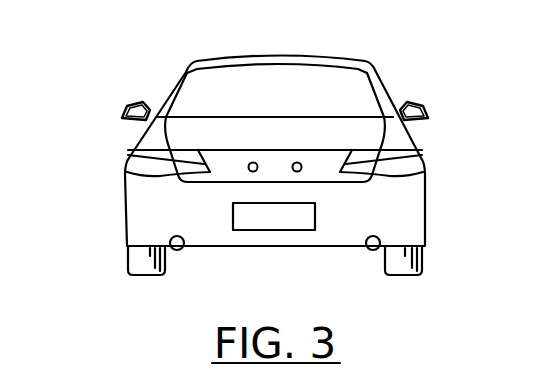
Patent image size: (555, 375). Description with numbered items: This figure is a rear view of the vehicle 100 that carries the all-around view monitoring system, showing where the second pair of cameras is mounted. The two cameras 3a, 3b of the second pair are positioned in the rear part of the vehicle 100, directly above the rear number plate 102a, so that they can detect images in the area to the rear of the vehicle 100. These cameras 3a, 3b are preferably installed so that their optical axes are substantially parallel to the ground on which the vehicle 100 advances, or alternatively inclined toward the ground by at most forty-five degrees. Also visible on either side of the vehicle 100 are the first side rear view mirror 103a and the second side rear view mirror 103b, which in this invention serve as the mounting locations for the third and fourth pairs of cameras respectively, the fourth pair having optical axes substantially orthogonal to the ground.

The vehicle 100 is at (197, 59).
The camera of the second pair 3a is at (253, 162).
The camera of the second pair 3b is at (297, 162).
The first side rear view mirror 103a is at (122, 117).
The second side rear view mirror 103b is at (429, 117).
The rear number plate 102a is at (287, 231).